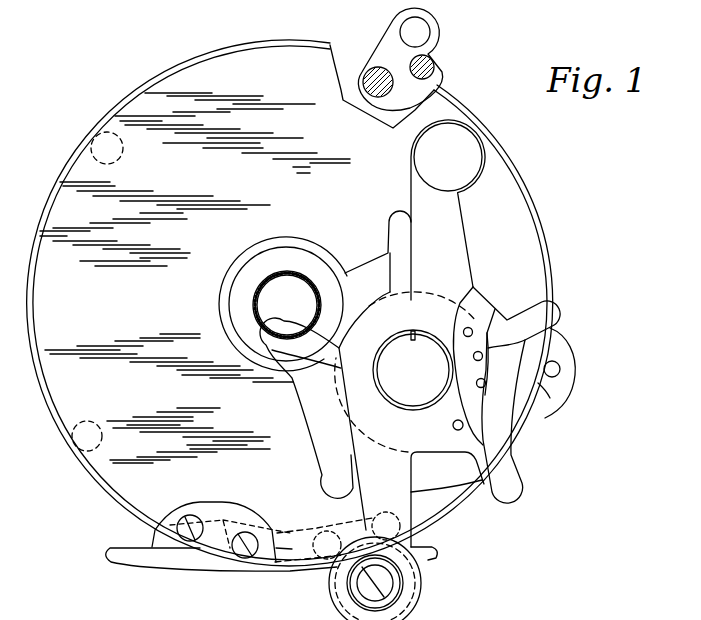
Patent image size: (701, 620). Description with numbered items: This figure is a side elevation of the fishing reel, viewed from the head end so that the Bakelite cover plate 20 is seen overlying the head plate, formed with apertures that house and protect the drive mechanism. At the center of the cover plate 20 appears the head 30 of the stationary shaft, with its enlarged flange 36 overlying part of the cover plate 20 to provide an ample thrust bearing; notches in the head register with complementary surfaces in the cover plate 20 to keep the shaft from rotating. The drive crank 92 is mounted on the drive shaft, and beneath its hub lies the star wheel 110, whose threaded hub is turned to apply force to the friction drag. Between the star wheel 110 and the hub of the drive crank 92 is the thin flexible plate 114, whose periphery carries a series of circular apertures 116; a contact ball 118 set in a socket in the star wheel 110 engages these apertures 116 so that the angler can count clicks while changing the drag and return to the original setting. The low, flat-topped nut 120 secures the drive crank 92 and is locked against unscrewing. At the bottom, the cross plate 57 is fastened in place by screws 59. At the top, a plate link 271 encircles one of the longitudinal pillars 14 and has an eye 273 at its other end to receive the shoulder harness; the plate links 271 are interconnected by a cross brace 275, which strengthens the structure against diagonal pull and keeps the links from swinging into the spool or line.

The longitudinal pillar 14 is at (353, 83).
The cover plate 20 is at (290, 303).
The head of the shaft 30 is at (298, 292).
The enlarged flange 36 is at (258, 270).
The cross plate 57 is at (133, 555).
The screws 59 is at (247, 550).
The drive crank 92 is at (446, 238).
The star wheel 110 is at (473, 428).
The thin flexible plate 114 is at (460, 335).
The circular apertures 116 is at (476, 383).
The contact ball 118 is at (456, 430).
The nut 120 is at (402, 390).
The plate link 271 is at (460, 48).
The eye 273 is at (400, 30).
The cross brace 275 is at (435, 70).